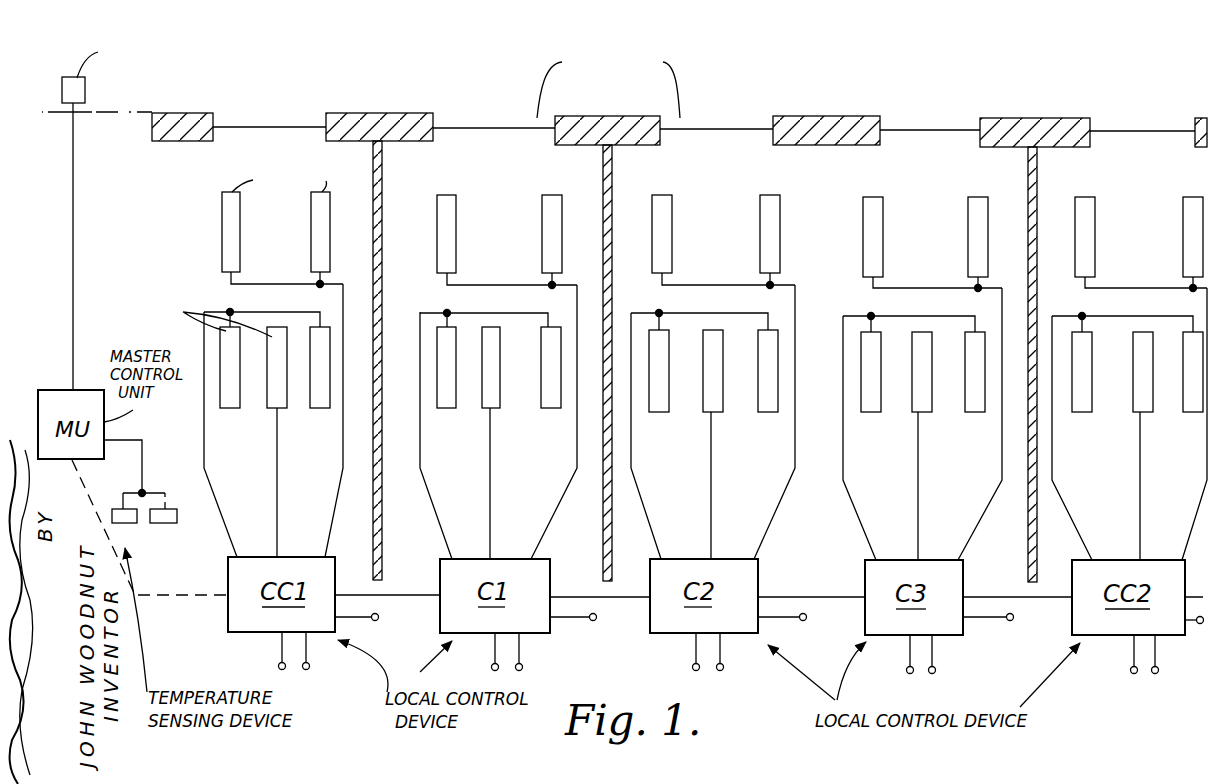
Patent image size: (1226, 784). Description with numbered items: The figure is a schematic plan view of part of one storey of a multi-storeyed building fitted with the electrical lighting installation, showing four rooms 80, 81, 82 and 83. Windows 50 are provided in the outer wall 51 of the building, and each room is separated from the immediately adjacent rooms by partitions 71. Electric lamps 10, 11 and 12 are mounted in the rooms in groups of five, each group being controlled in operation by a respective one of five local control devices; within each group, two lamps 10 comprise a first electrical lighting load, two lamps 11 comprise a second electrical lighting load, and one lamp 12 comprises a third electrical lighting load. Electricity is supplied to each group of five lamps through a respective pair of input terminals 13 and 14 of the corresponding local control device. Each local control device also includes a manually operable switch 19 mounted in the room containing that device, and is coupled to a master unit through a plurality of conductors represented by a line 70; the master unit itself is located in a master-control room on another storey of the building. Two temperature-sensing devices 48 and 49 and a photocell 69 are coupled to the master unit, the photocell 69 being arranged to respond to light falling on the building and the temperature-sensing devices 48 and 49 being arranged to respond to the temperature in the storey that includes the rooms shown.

The photocell 69 is at (86, 86).
The outer wall 51 is at (183, 113).
The windows 50 is at (276, 127).
The partitions 71 is at (382, 165).
The lamps 10 is at (311, 227).
The room 80 is at (195, 253).
The room 81 is at (421, 253).
The room 82 is at (645, 258).
The room 83 is at (1068, 263).
The lamps 11 is at (232, 408).
The lamp 12 is at (283, 408).
The temperature-sensing device 48 is at (127, 523).
The temperature-sensing device 49 is at (172, 523).
The line 70 is at (200, 596).
The manually operable switch 19 is at (377, 621).
The input terminal 13 is at (278, 667).
The input terminal 14 is at (310, 667).